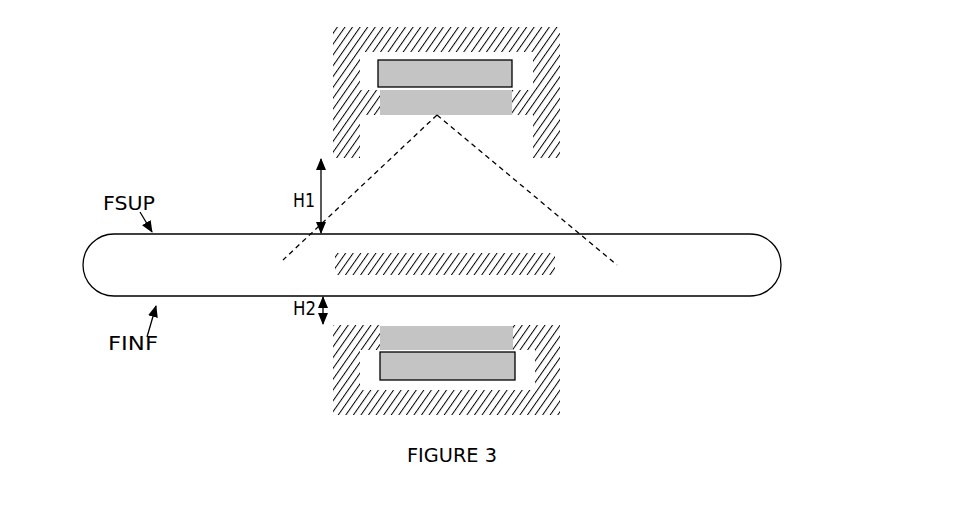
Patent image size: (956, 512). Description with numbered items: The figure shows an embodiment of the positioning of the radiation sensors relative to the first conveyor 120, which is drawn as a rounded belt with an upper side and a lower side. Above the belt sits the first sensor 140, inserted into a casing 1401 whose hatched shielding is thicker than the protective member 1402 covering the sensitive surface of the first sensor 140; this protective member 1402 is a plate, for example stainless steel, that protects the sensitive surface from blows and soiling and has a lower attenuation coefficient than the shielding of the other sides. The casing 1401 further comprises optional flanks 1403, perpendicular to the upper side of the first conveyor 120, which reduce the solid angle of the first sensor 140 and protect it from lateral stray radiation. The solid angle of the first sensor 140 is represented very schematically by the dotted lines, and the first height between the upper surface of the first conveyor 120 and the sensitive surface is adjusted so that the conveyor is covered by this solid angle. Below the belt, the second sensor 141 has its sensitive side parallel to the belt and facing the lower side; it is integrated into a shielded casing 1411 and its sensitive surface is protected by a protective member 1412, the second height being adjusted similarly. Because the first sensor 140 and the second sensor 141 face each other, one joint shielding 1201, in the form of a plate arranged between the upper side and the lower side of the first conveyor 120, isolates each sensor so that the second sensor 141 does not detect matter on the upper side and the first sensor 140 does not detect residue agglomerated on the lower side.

The first conveyor 120 is at (138, 271).
The shielding 1201 is at (561, 261).
The first sensor 140 is at (459, 84).
The casing 1401 is at (561, 63).
The protective member 1402 is at (499, 105).
The flanks 1403 is at (561, 142).
The second sensor 141 is at (461, 377).
The shielded casing 1411 is at (561, 387).
The protective member 1412 is at (499, 338).